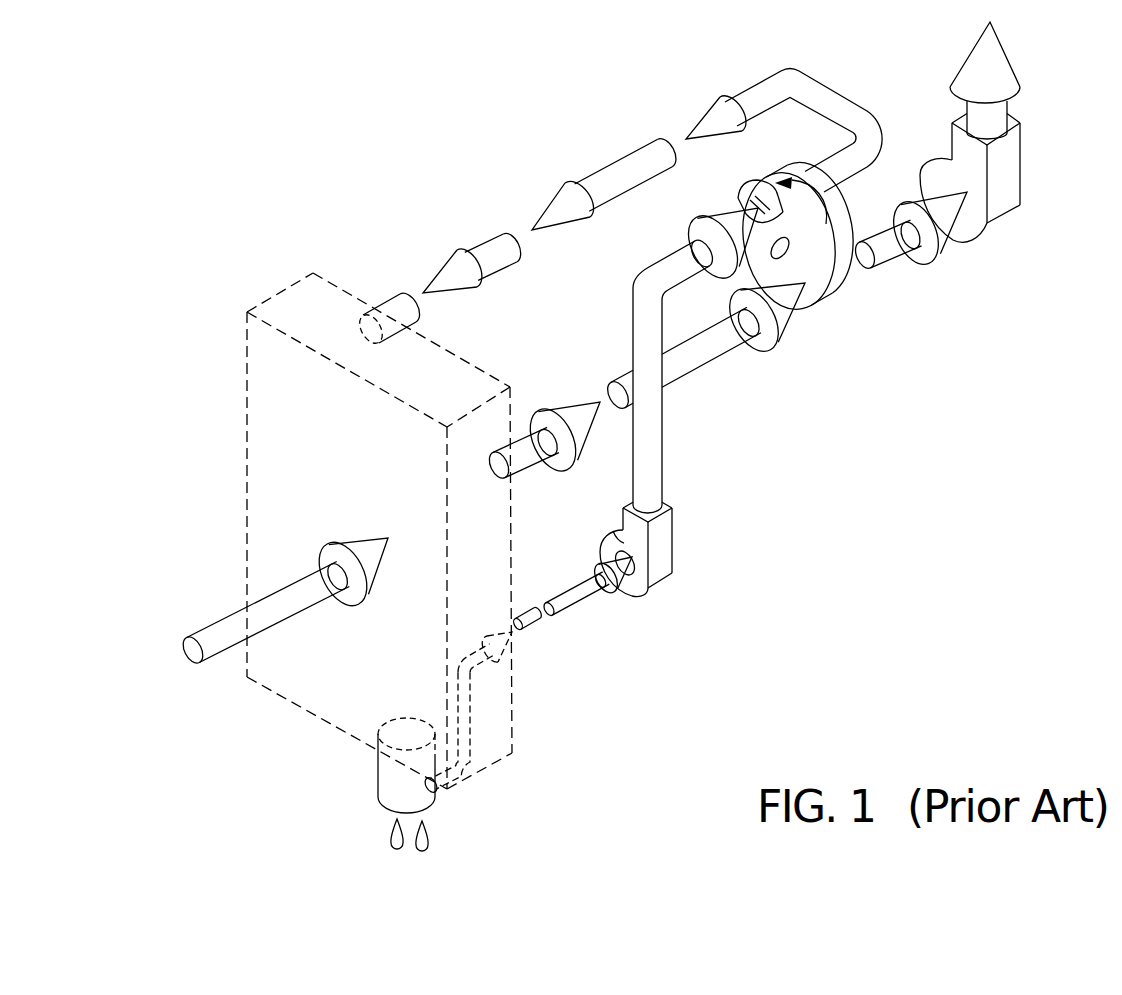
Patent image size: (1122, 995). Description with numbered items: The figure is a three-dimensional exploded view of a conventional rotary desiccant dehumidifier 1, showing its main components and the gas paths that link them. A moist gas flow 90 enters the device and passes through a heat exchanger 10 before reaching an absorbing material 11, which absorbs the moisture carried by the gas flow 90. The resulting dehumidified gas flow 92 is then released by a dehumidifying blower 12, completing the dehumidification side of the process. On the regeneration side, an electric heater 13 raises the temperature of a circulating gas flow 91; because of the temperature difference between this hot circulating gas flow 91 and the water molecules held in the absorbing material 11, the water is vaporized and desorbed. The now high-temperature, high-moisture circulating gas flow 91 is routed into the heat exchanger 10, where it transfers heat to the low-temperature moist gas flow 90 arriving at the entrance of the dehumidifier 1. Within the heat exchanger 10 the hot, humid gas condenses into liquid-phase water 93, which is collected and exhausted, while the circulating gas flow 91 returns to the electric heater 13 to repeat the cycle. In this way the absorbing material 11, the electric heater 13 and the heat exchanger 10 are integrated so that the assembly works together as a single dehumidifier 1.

The rotary desiccant dehumidifier 1 is at (248, 165).
The heat exchanger 10 is at (302, 313).
The absorbing material 11 is at (820, 267).
The dehumidifying blower 12 is at (1012, 188).
The electric heater 13 is at (758, 186).
The moist gas flow 90 is at (275, 600).
The circulating gas flow 91 is at (487, 248).
The dehumidified gas flow 92 is at (890, 247).
The liquid-phase water 93 is at (425, 846).